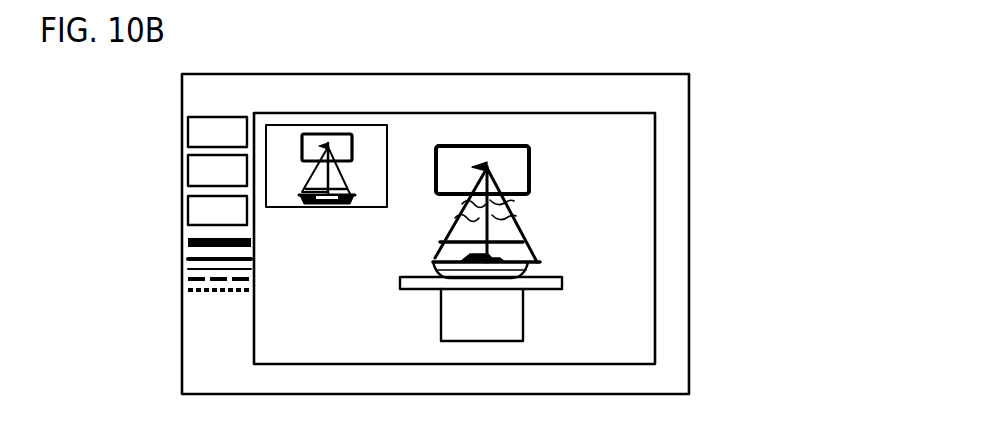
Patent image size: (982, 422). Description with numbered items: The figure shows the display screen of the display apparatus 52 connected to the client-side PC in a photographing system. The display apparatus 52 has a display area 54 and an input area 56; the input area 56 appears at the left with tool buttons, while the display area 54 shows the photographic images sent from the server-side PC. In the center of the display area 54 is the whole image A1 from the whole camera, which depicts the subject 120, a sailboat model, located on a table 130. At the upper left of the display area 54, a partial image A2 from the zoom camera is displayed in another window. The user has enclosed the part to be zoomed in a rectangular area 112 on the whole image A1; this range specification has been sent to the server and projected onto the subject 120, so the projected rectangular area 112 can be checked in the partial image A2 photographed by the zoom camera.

The display apparatus 52 is at (689, 242).
The display area 54 is at (655, 335).
The input area 56 is at (212, 307).
The rectangular area 112 is at (352, 141).
The subject 120 is at (521, 232).
The table 130 is at (562, 283).
The whole image A1 is at (347, 307).
The partial image A2 is at (293, 208).